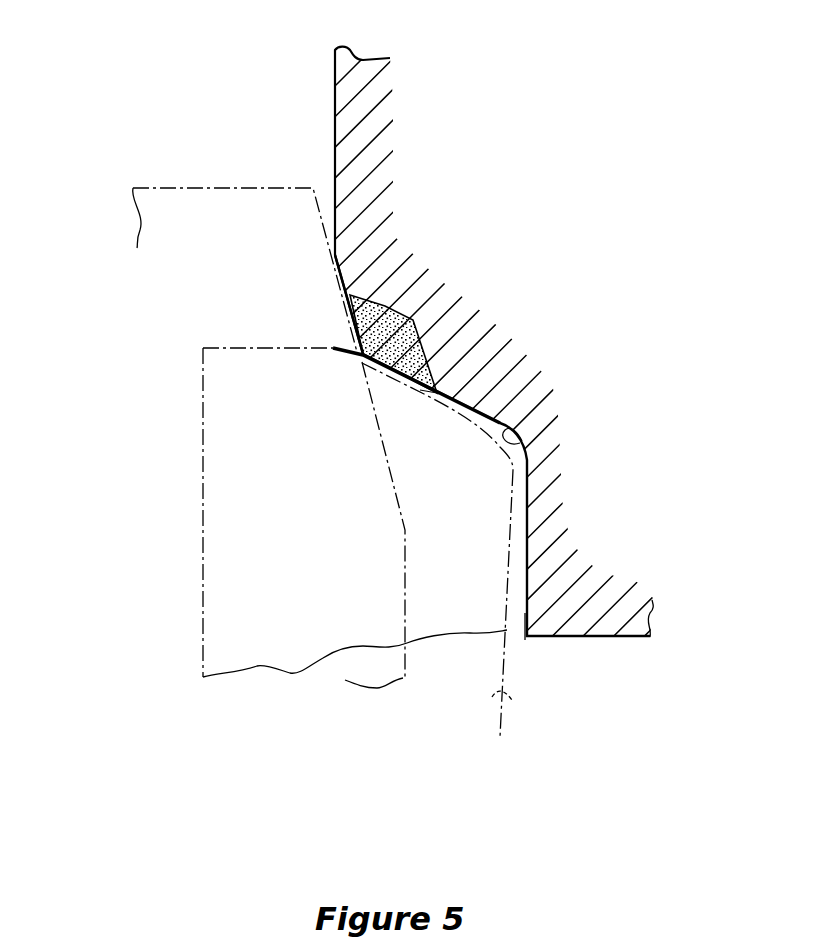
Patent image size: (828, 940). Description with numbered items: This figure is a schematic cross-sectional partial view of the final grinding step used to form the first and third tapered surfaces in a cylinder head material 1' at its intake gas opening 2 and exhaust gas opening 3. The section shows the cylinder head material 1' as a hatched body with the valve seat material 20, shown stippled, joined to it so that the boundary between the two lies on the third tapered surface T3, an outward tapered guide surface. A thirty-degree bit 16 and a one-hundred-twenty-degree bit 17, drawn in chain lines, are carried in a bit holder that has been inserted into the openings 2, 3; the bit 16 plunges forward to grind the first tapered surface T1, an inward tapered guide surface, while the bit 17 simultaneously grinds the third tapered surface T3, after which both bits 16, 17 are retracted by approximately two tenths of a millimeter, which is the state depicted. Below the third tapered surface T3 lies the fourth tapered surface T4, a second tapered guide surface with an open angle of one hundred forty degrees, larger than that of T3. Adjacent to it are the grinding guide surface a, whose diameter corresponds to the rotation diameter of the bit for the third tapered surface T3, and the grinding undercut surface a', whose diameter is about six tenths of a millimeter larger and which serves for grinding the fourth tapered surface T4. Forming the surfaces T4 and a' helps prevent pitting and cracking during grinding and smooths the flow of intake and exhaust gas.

The cylinder head material 1' is at (414, 336).
The intake gas opening 2 is at (337, 135).
The exhaust gas opening 3 is at (414, 350).
The 30°-bit 16 is at (183, 188).
The 120°-bit 17 is at (203, 431).
The valve seat material 20 is at (413, 338).
The first tapered surface T1 is at (340, 252).
The third tapered surface T3 is at (423, 388).
The fourth tapered surface T4 is at (517, 444).
The grinding guide surface a is at (529, 605).
The grinding undercut surface a' is at (568, 661).